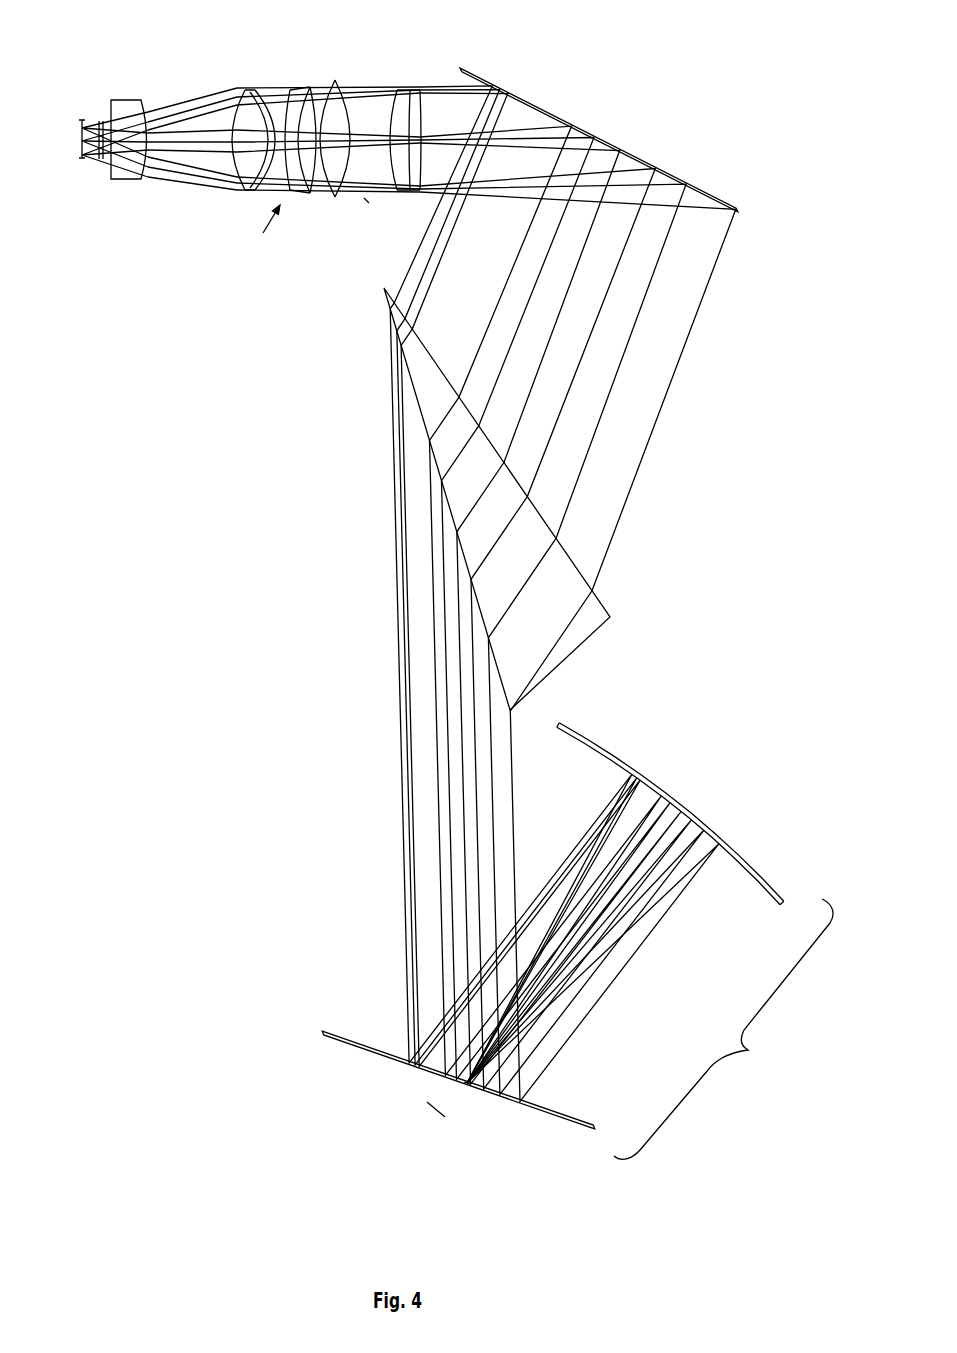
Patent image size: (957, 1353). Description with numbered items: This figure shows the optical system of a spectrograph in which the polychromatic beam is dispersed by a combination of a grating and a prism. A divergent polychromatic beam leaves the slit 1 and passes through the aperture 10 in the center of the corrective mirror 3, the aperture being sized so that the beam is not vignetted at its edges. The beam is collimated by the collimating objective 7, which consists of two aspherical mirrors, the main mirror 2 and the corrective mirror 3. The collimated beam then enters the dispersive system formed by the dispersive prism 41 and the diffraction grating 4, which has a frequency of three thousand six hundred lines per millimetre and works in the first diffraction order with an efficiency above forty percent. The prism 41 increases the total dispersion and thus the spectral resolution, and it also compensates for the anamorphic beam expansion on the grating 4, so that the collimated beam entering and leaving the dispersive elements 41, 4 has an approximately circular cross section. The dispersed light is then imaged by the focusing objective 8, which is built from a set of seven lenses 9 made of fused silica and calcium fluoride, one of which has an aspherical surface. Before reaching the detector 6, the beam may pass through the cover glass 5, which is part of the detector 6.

The slit 1 is at (427, 1103).
The main mirror 2 is at (752, 868).
The corrective mirror 3 is at (540, 1110).
The diffraction grating 4 is at (528, 103).
The cover glass 5 is at (100, 120).
The detector 6 is at (82, 124).
The collimating objective 7 is at (723, 1029).
The focusing objective 8 is at (435, 77).
The lens 9 is at (267, 234).
The aperture 10 is at (470, 1090).
The dispersive prism 41 is at (425, 378).